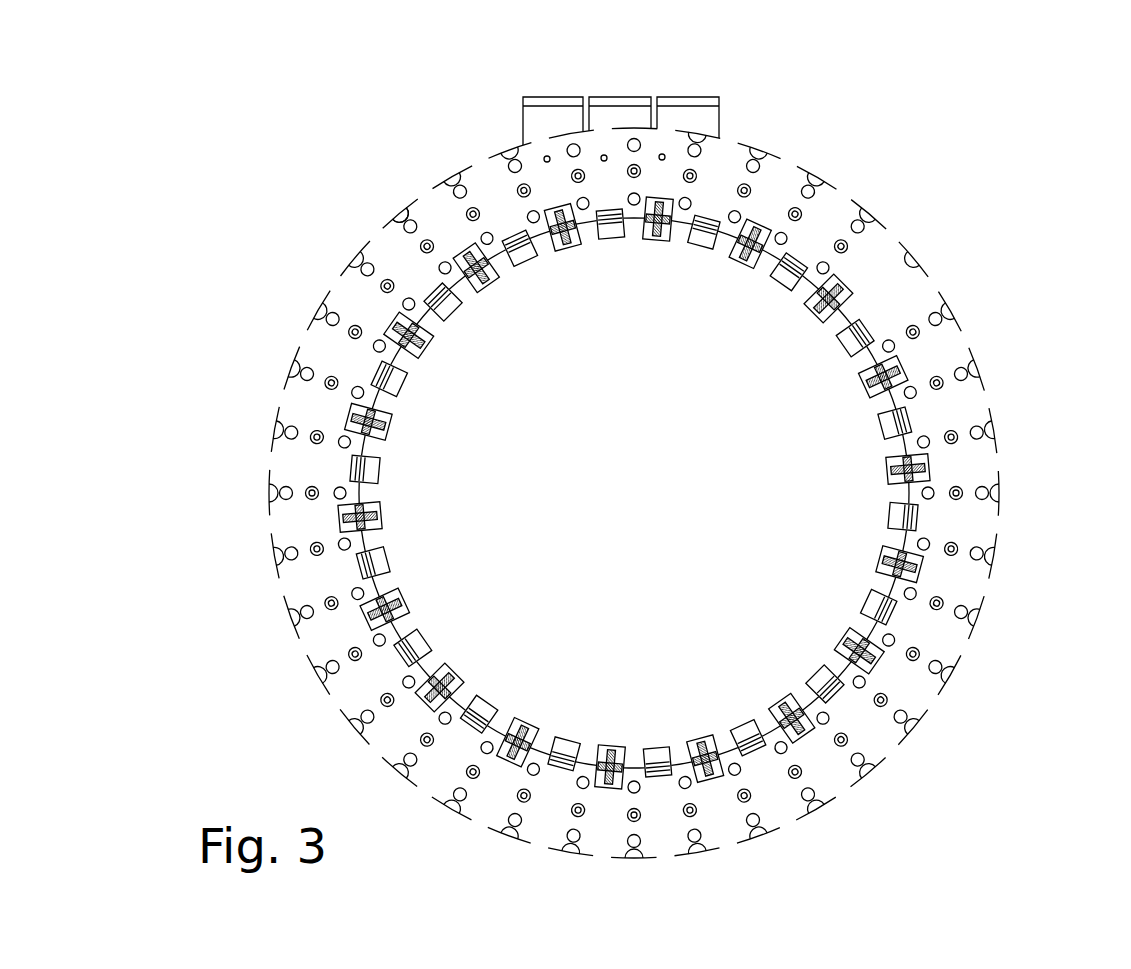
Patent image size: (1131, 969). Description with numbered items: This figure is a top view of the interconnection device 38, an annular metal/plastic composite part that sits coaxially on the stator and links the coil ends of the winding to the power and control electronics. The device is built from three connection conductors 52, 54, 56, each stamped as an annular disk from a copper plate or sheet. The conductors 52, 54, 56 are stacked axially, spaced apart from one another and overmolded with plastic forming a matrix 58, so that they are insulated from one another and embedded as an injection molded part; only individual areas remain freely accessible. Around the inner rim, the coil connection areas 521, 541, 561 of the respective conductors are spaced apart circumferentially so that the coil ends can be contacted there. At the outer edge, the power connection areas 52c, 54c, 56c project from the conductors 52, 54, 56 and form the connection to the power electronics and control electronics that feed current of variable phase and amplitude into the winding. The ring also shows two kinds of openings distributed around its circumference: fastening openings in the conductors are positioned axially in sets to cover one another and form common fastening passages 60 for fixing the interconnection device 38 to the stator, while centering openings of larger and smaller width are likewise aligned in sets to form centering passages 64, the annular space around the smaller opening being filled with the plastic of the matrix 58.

The interconnection device 38 is at (992, 218).
The connection conductor 52 is at (479, 159).
The connection conductor 54 is at (379, 233).
The connection conductor 56 is at (426, 191).
The plastics matrix 58 is at (856, 260).
The fastening passage 60 is at (989, 490).
The centering passage 64 is at (947, 377).
The coil connection area 521 is at (610, 237).
The coil connection area 541 is at (567, 246).
The coil connection area 561 is at (485, 281).
The power connection area 52c is at (540, 97).
The power connection area 54c is at (603, 97).
The power connection area 56c is at (687, 97).